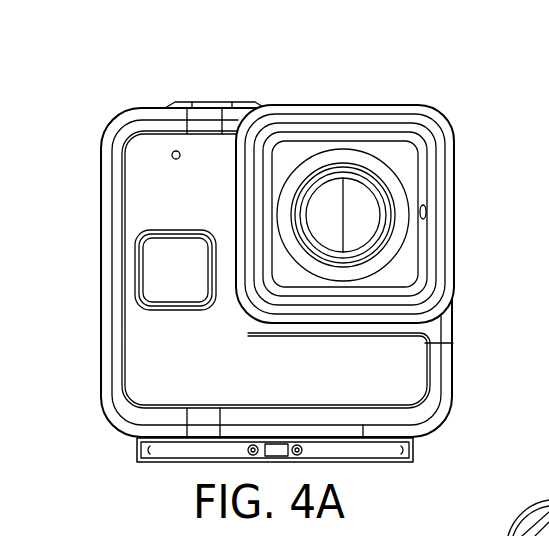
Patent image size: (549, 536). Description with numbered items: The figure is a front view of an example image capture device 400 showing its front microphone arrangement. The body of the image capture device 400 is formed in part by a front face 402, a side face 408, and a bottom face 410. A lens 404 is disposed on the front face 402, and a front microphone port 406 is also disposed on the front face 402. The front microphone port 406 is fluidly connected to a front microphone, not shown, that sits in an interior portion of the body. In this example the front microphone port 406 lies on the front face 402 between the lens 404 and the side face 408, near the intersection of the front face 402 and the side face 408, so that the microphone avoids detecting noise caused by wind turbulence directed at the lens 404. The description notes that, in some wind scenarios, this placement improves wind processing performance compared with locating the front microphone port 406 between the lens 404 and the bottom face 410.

The image capture device 400 is at (276, 71).
The front face 402 is at (133, 350).
The lens 404 is at (443, 162).
The front microphone port 406 is at (162, 158).
The side face 408 is at (100, 298).
The bottom face 410 is at (374, 440).